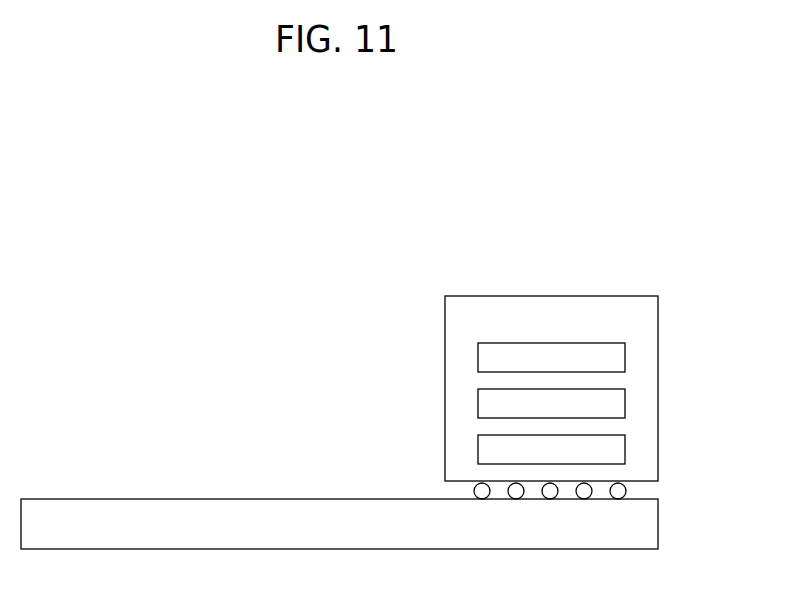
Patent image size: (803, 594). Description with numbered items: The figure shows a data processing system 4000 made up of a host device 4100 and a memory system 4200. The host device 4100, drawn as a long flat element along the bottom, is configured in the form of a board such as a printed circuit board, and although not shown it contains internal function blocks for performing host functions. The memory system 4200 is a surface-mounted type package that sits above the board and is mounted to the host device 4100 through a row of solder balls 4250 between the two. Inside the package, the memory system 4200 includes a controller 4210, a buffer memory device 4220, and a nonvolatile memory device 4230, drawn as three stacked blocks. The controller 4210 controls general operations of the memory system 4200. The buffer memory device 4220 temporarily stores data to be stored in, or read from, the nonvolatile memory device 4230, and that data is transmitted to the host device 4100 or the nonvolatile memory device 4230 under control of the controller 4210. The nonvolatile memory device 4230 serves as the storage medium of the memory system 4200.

The data processing system 4000 is at (82, 258).
The host device 4100 is at (339, 524).
The memory system 4200 is at (551, 388).
The controller 4210 is at (551, 357).
The buffer memory device 4220 is at (551, 403).
The nonvolatile memory device 4230 is at (551, 449).
The solder balls 4250 is at (637, 492).